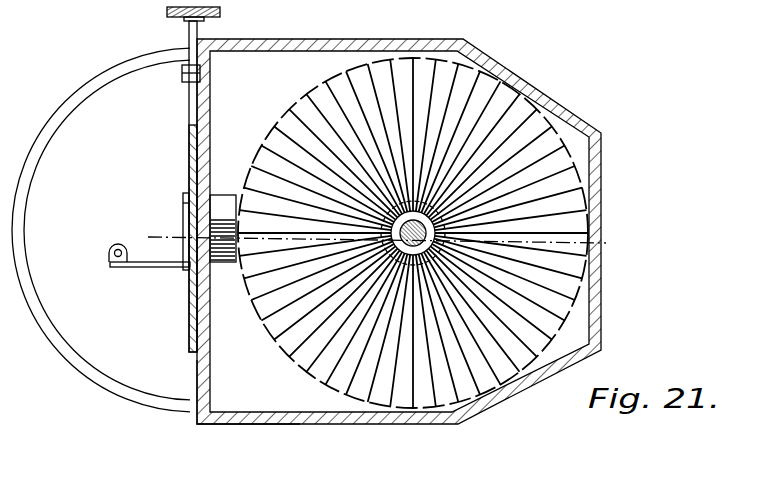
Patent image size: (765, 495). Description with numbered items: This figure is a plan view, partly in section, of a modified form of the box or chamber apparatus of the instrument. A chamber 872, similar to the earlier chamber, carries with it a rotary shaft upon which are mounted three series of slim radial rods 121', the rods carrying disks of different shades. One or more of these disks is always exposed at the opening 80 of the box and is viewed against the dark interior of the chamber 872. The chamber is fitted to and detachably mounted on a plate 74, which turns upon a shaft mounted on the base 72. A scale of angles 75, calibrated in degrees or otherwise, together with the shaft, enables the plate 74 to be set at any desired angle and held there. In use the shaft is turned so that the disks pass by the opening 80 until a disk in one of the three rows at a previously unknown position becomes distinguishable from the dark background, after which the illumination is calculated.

The base 72 is at (194, 230).
The plate 74 is at (197, 302).
The scale of angles 75 is at (145, 264).
The opening 80 is at (647, 246).
The chamber 872 is at (248, 392).
The radial rods 121' is at (413, 233).